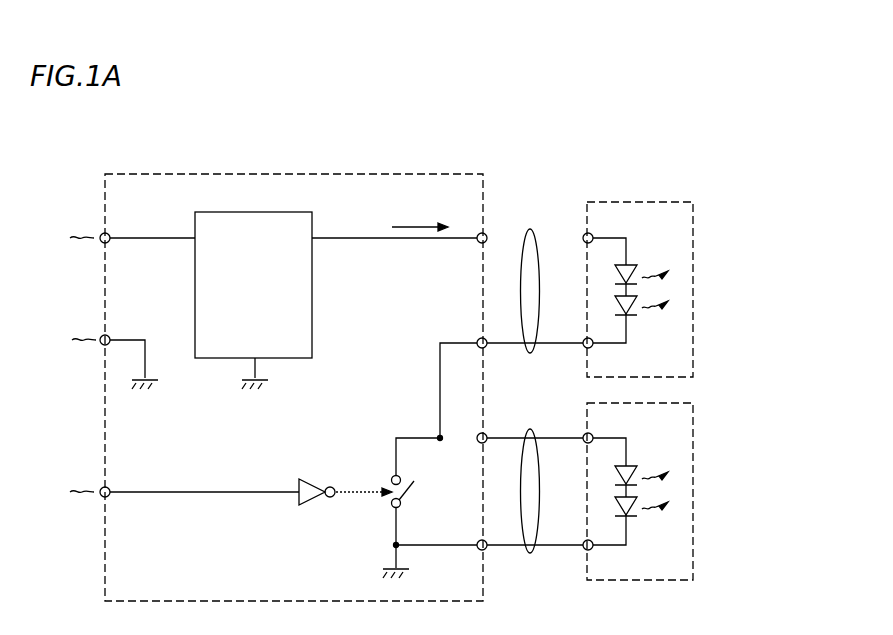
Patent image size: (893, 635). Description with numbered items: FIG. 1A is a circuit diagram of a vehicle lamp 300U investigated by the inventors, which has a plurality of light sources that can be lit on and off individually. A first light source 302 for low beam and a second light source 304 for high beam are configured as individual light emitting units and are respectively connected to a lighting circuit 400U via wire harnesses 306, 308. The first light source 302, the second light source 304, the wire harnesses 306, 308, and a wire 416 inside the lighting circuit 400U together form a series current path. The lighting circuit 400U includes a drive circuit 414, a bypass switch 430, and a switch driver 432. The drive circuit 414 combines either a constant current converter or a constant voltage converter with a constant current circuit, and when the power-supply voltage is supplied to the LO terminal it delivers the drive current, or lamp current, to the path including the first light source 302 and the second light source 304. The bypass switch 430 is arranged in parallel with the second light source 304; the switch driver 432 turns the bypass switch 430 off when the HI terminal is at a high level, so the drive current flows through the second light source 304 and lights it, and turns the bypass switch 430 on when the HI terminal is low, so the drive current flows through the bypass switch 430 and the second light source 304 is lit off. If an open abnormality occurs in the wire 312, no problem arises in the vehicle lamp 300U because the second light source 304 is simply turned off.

The vehicle lamp 300U is at (710, 116).
The lighting circuit 400U is at (346, 174).
The drive circuit 414 is at (240, 212).
The wire 416 is at (439, 373).
The bypass switch 430 is at (413, 495).
The switch driver 432 is at (312, 500).
The wire harness 306 is at (532, 228).
The wire harness 308 is at (531, 553).
The wire 312 is at (541, 349).
The first light source 302 is at (693, 322).
The second light source 304 is at (693, 524).